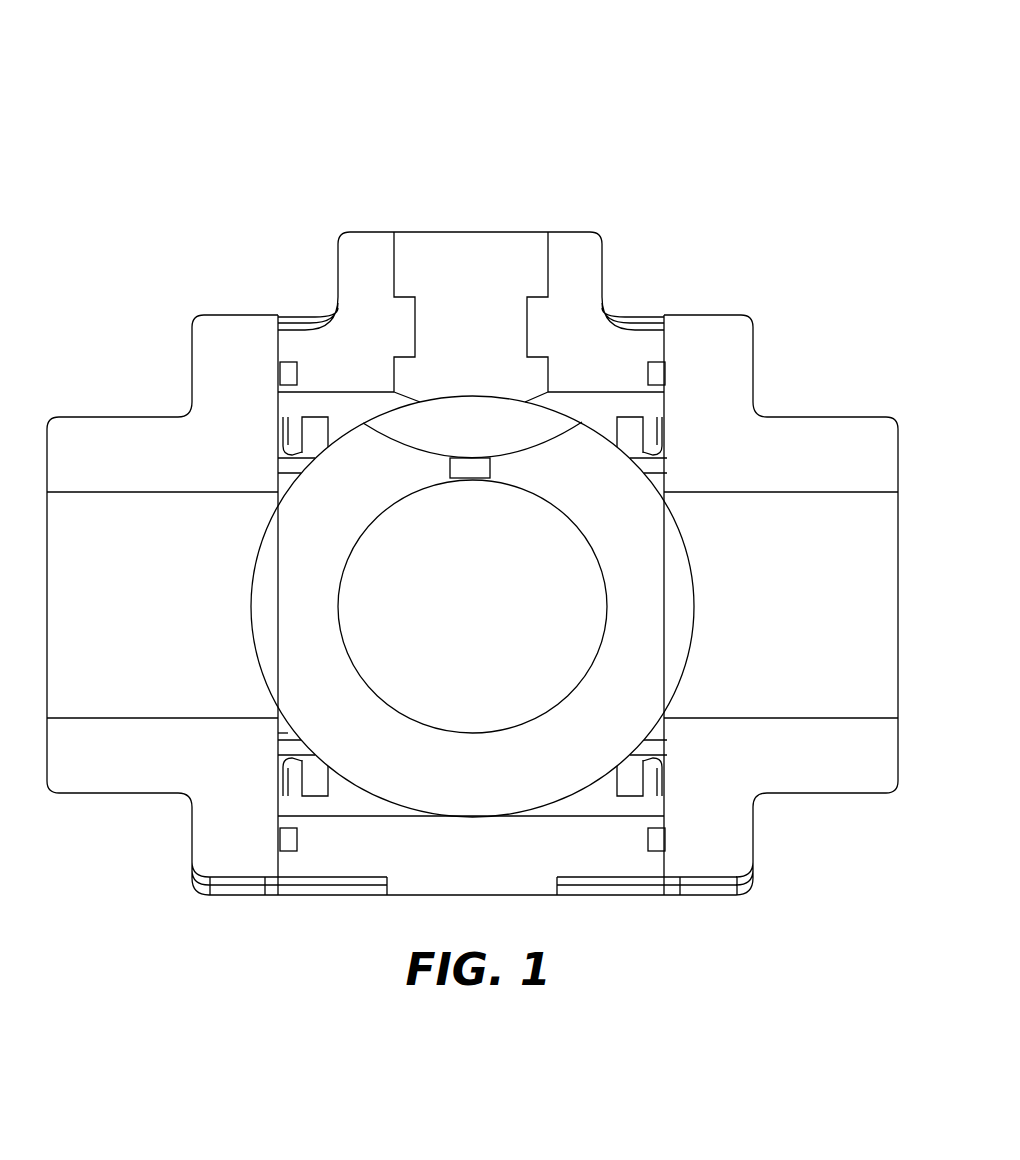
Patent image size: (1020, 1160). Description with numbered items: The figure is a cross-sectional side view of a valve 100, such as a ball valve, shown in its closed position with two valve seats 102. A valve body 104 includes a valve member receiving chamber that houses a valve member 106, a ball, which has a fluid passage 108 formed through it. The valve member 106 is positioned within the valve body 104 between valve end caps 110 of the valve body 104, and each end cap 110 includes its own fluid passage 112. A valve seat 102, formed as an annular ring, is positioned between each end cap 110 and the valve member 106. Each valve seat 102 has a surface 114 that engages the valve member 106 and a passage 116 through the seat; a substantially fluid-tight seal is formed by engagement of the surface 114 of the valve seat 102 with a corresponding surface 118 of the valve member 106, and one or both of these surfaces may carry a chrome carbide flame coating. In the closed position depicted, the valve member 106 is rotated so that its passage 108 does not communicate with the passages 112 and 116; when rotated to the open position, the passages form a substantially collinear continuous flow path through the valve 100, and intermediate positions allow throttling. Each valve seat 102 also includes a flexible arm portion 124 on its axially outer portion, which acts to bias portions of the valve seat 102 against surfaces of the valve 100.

The valve 100 is at (522, 80).
The valve seat 102 is at (313, 422).
The valve body 104 is at (570, 248).
The valve member 106 is at (532, 797).
The fluid passage 108 is at (437, 703).
The valve end cap 110 is at (145, 770).
The fluid passage 112 is at (163, 525).
The surface 114 is at (283, 430).
The passage 116 is at (280, 738).
The surface 118 is at (283, 463).
The flexible arm portion 124 is at (663, 437).